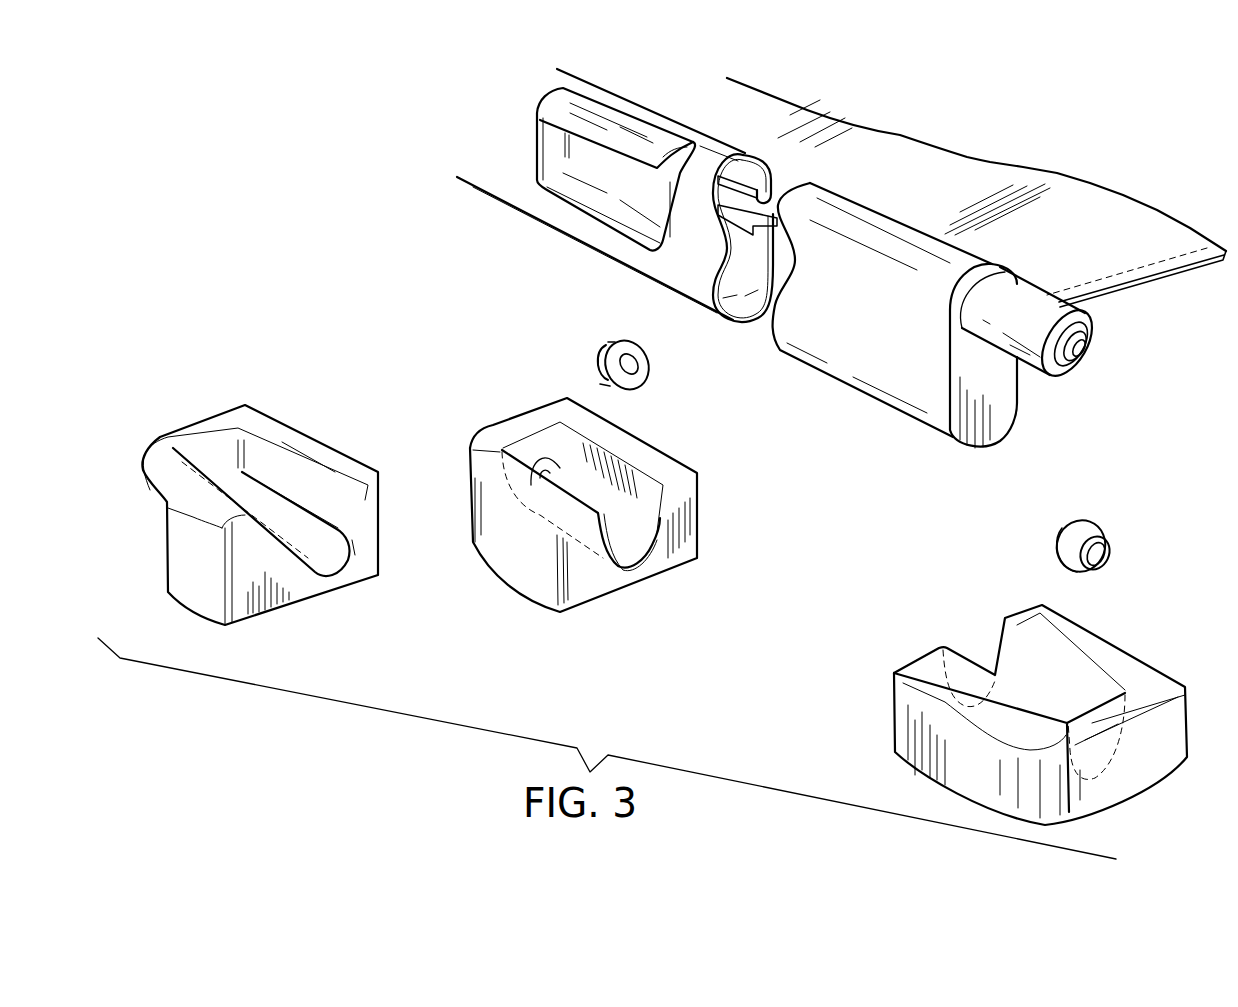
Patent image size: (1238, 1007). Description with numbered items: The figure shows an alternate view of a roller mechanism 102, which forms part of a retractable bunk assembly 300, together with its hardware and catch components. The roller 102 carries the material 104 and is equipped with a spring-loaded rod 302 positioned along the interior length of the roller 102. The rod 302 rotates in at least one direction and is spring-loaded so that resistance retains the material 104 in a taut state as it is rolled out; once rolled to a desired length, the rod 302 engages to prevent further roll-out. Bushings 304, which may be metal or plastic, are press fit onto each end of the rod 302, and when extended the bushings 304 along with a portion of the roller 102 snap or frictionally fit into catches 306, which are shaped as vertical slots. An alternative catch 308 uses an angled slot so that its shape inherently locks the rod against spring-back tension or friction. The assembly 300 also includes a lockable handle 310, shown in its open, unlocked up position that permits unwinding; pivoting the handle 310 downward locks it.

The retractable bunk assembly 300 is at (1069, 133).
The lockable handle 310 is at (606, 112).
The material 104 is at (1140, 227).
The roller mechanism 102 is at (1022, 285).
The spring-loaded rod 302 is at (1090, 334).
The bushings 304 is at (624, 340).
The catches 306 is at (662, 450).
The catch 308 is at (308, 430).